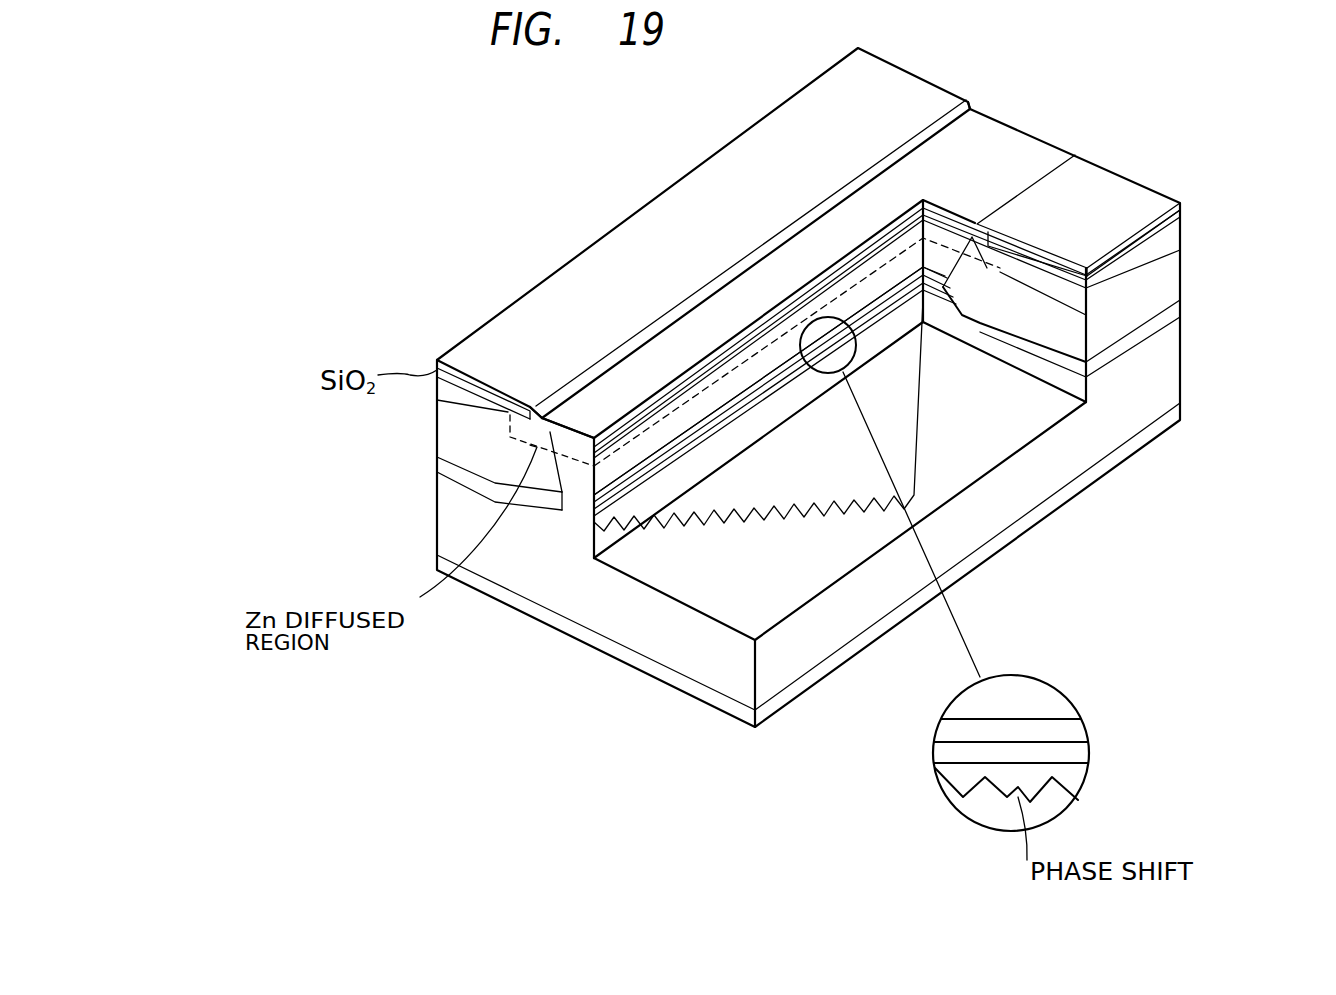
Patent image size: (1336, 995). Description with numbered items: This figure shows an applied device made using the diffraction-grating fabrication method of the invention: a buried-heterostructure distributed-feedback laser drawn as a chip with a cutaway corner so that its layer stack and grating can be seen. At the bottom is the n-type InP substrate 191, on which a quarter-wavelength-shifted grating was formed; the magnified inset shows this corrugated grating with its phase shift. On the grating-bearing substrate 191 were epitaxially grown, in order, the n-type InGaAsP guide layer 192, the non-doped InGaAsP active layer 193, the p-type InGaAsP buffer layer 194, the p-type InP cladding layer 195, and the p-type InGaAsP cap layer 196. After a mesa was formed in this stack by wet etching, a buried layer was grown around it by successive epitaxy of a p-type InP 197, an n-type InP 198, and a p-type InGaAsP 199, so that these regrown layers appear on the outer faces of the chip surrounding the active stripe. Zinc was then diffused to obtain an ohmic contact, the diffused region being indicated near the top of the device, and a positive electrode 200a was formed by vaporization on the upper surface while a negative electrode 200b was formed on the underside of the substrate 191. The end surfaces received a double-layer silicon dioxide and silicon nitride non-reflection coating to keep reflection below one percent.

The n-type InP substrate 191 is at (1180, 368).
The n-type InGaAsP guide layer 192 is at (1080, 775).
The non-doped InGaAsP active layer 193 is at (1083, 753).
The p-type InGaAsP buffer layer 194 is at (1078, 732).
The p-type InP cladding layer 195 is at (1023, 683).
The p-type InGaAsP cap layer 196 is at (563, 435).
The p-type InP 197 is at (1180, 302).
The n-type InP 198 is at (1180, 270).
The p-type InGaAsP 199 is at (1180, 233).
The positive electrode 200a is at (1106, 168).
The negative electrode 200b is at (1082, 484).